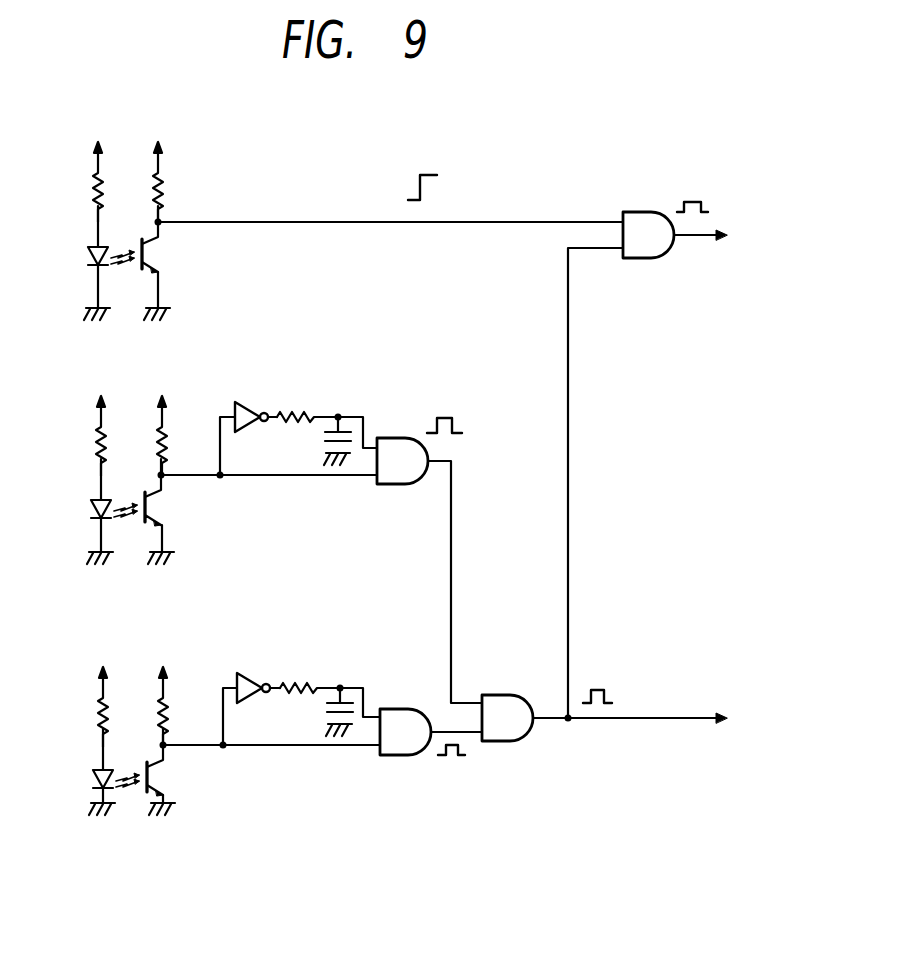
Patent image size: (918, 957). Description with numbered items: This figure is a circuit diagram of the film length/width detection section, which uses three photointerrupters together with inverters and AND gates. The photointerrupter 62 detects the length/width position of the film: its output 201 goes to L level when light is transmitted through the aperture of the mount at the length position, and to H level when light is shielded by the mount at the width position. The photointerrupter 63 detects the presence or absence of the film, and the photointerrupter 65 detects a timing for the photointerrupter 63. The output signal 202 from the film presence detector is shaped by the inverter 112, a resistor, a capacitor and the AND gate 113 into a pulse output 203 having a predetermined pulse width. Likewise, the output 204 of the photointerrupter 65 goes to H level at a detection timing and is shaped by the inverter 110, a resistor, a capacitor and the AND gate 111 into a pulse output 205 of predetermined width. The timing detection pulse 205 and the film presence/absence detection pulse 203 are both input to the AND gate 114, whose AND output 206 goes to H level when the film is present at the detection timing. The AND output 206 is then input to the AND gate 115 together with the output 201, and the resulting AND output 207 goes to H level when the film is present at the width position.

The photointerrupter 62 is at (122, 162).
The photointerrupter 65 is at (130, 556).
The photointerrupter 63 is at (134, 805).
The inverter 110 is at (246, 402).
The inverter 112 is at (249, 671).
The AND gate 111 is at (399, 437).
The AND gate 113 is at (404, 706).
The AND gate 114 is at (512, 694).
The AND gate 115 is at (644, 210).
The output 201 is at (259, 218).
The output signal 202 is at (203, 750).
The pulse output 203 is at (441, 736).
The output 204 is at (201, 479).
The pulse output 205 is at (452, 532).
The AND output 206 is at (553, 722).
The AND output 207 is at (694, 246).